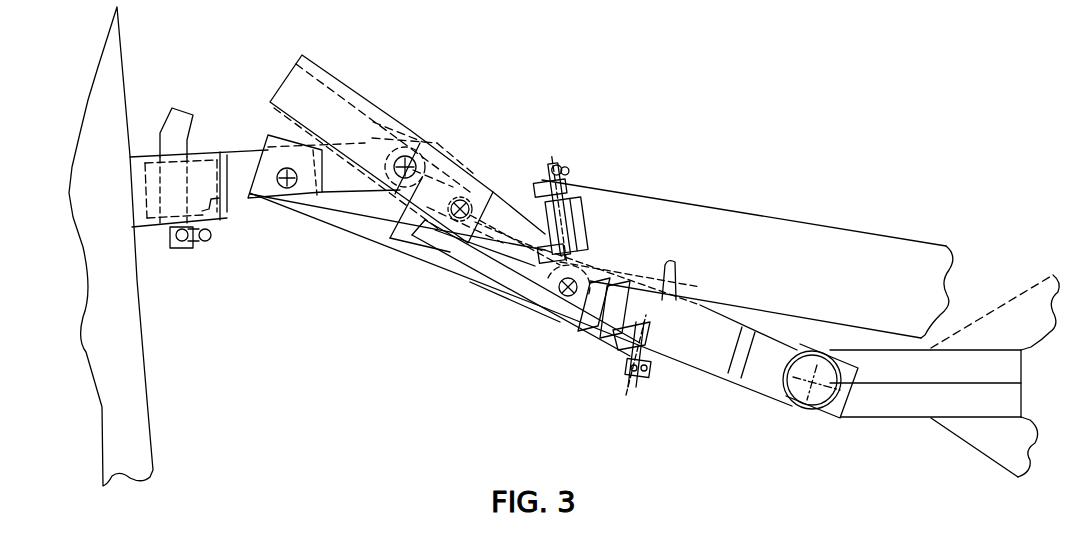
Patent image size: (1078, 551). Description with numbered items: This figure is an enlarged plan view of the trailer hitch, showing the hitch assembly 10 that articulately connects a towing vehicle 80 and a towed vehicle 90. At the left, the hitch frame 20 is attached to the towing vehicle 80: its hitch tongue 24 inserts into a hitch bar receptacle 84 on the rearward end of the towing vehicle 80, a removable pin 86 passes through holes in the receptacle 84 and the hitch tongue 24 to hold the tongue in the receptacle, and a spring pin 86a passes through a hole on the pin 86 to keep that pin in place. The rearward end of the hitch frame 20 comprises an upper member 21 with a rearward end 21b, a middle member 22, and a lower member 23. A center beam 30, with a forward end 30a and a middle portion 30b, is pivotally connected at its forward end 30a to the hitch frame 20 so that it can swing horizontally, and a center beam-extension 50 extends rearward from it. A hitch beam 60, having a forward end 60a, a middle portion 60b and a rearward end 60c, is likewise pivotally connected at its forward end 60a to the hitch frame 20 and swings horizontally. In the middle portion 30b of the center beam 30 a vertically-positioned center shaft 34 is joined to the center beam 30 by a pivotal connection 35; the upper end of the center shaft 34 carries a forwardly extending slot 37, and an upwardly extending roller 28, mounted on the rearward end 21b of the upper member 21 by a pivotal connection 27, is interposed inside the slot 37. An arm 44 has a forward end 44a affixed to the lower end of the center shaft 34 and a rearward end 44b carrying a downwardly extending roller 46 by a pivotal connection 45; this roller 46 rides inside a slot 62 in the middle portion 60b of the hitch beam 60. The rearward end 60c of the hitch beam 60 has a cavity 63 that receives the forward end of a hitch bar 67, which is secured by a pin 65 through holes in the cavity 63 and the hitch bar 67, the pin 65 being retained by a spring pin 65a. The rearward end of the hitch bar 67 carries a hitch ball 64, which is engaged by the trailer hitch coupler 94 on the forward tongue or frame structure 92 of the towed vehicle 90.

The hitch assembly 10 is at (583, 108).
The hitch frame 20 is at (223, 153).
The middle member 22 is at (181, 189).
The lower member 23 is at (182, 189).
The upper member 21 is at (372, 138).
The rearward end 21b is at (423, 143).
The hitch tongue 24 is at (220, 210).
The pivotal connection 27 is at (400, 140).
The roller 28 is at (405, 167).
The center beam 30 is at (492, 193).
The forward end 30a is at (267, 160).
The middle portion 30b is at (577, 207).
The center shaft 34 is at (468, 190).
The pivotal connection 35 is at (480, 180).
The slot 37 is at (345, 80).
The arm 44 is at (480, 253).
The forward end 44a is at (425, 258).
The rearward end 44b is at (508, 315).
The pivotal connection 45 is at (555, 308).
The roller 46 is at (575, 327).
The center beam-extension 50 is at (725, 205).
The hitch beam 60 is at (475, 290).
The forward end 60a is at (347, 238).
The middle portion 60b is at (671, 300).
The rearward end 60c is at (633, 363).
The slot 62 is at (485, 308).
The cavity 63 is at (632, 338).
The hitch ball 64 is at (795, 400).
The pin 65 is at (640, 383).
The spring pin 65a is at (650, 372).
The hitch bar 67 is at (747, 385).
The towing vehicle 80 is at (147, 375).
The hitch bar receptacle 84 is at (150, 228).
The removable pin 86 is at (162, 132).
The spring pin 86a is at (203, 245).
The towed vehicle 90 is at (970, 453).
The tongue or frame structure 92 is at (984, 447).
The trailer hitch coupler 94 is at (807, 417).